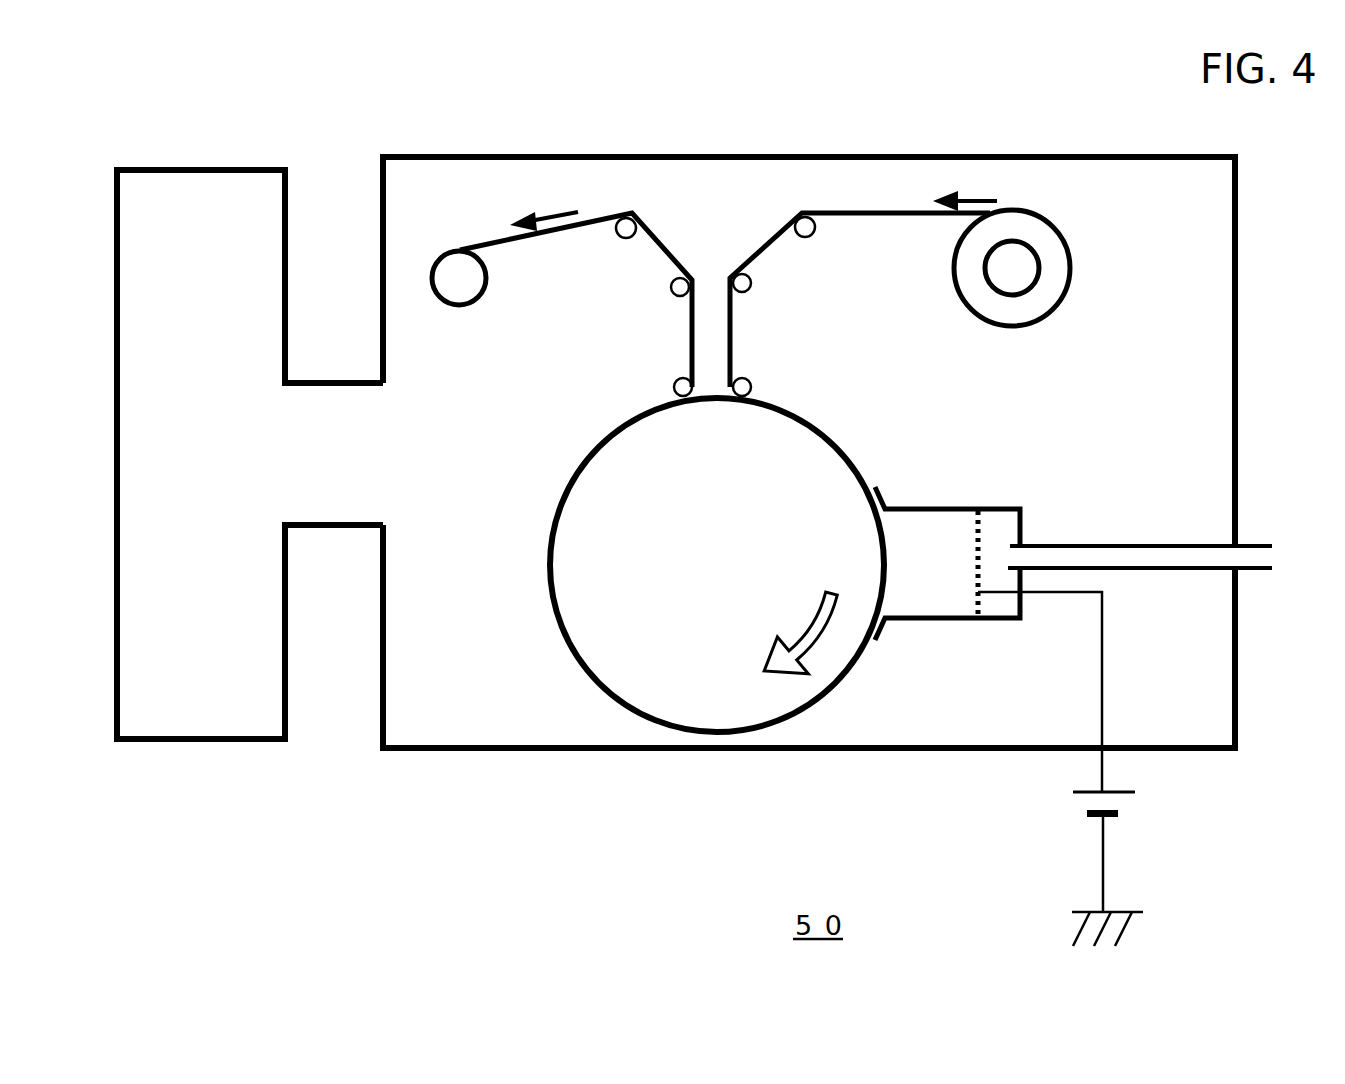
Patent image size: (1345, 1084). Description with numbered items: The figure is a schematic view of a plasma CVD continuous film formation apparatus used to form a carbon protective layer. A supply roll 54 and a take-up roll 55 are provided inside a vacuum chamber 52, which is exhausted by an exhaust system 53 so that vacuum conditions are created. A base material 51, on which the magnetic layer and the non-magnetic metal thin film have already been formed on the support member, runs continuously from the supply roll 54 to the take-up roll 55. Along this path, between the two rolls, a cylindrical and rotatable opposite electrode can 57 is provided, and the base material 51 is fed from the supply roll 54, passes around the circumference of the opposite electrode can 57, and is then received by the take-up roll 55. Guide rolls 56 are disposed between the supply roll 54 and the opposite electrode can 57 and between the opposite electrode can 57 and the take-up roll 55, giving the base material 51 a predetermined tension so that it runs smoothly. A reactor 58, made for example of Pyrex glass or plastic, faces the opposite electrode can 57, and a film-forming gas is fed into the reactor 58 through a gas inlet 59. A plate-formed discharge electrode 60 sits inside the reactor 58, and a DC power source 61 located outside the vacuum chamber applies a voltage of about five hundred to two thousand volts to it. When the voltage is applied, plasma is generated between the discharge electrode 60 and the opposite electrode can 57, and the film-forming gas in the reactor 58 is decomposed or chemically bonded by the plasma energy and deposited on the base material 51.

The base material 51 is at (873, 212).
The vacuum chamber 52 is at (1237, 297).
The exhaust system 53 is at (195, 715).
The supply roll 54 is at (1050, 287).
The take-up roll 55 is at (457, 287).
The guide rolls 56 is at (633, 216).
The opposite electrode can 57 is at (600, 652).
The reactor 58 is at (940, 509).
The gas inlet 59 is at (1248, 543).
The discharge electrode 60 is at (975, 558).
The DC power source 61 is at (1117, 792).